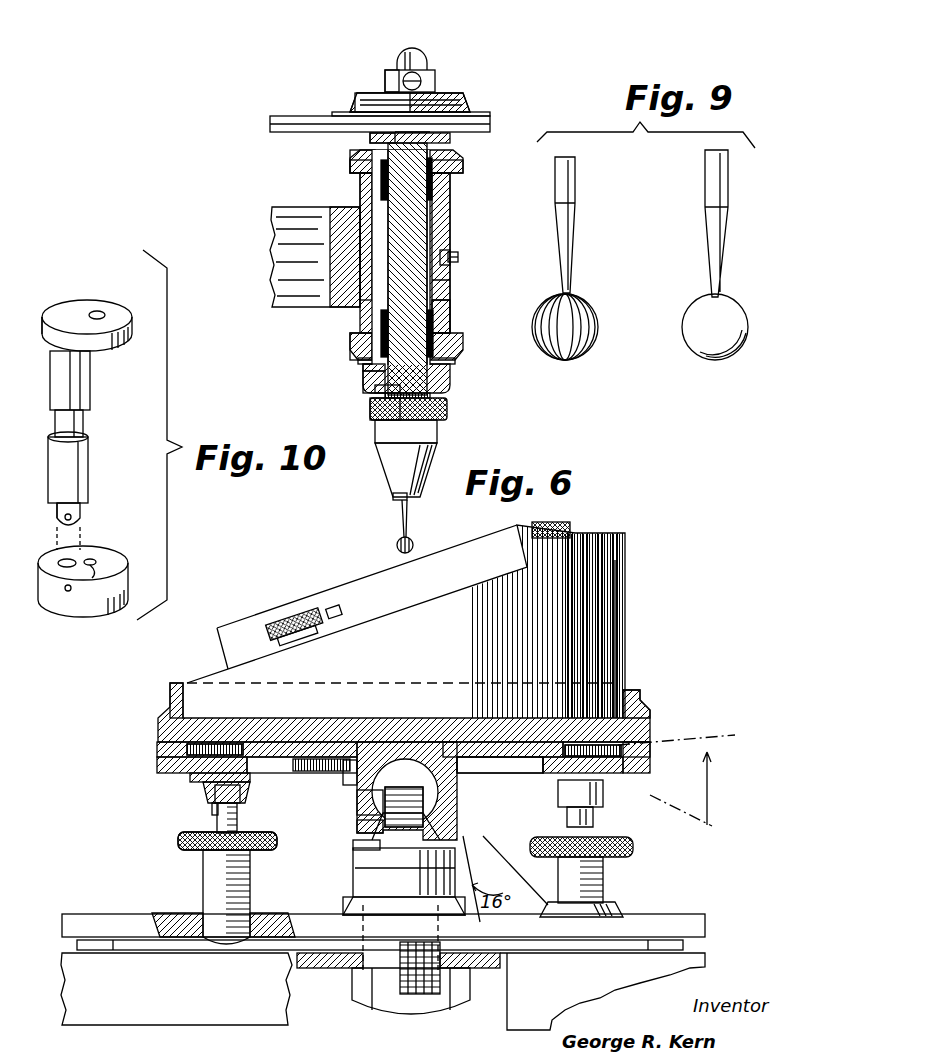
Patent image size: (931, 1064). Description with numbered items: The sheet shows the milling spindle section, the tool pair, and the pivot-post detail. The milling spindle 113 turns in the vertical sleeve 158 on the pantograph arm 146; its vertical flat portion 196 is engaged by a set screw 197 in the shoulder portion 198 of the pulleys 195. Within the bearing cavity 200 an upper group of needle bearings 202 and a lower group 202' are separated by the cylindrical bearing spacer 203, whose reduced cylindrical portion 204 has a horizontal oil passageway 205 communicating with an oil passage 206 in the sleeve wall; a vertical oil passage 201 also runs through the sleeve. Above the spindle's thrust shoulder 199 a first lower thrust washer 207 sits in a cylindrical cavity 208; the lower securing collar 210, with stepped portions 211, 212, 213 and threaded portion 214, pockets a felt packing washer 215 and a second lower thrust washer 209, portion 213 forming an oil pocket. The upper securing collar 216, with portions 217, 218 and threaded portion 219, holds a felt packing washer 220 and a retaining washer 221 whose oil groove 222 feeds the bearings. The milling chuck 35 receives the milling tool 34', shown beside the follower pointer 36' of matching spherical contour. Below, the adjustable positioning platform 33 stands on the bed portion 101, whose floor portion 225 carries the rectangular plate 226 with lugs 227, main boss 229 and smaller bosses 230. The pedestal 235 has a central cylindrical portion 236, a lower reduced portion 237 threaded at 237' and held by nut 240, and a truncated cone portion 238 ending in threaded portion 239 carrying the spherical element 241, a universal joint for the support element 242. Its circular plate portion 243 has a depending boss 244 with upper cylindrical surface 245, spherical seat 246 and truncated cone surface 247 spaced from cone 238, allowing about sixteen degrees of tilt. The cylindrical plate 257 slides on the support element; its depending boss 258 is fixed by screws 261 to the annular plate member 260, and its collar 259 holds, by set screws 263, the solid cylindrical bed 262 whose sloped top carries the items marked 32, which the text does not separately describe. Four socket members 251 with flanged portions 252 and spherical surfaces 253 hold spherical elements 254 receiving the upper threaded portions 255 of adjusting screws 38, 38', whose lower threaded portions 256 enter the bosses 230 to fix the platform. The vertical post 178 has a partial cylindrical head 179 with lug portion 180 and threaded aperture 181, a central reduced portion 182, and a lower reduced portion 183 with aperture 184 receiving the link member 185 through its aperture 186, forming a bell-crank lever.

In FIG. 6, the vertical flat portion 196 is at (410, 48).
In FIG. 6, the milling spindle 113 is at (447, 30).
In FIG. 6, the set screw 197 is at (386, 79).
In FIG. 6, the shoulder portion 198 is at (436, 80).
In FIG. 6, the pulleys 195 is at (472, 89).
In FIG. 6, the arm 146 is at (291, 197).
In FIG. 6, the upper securing collar 216 is at (451, 136).
In FIG. 6, the cylindrical portion 217 is at (458, 146).
In FIG. 6, the cylindrical portion 218 is at (463, 159).
In FIG. 6, the internally threaded portion 219 is at (463, 170).
In FIG. 6, the felt packing washer 220 is at (370, 138).
In FIG. 6, the retaining washer 221 is at (362, 158).
In FIG. 6, the oil groove 222 is at (366, 186).
In FIG. 6, the upper group of needle bearings 202 is at (442, 253).
In FIG. 6, the vertical sleeve 158 is at (452, 223).
In FIG. 6, the cylindrical bearing spacer 203 is at (428, 239).
In FIG. 6, the reduced cylindrical portion 204 is at (459, 258).
In FIG. 6, the oil passage 206 is at (456, 263).
In FIG. 6, the horizontal oil passageway 205 is at (446, 286).
In FIG. 6, the lower group of needle bearings 202' is at (478, 319).
In FIG. 6, the first lower thrust washer 207 is at (466, 349).
In FIG. 6, the cylindrical cavity 208 is at (462, 361).
In FIG. 6, the second lower thrust washer 209 is at (452, 379).
In FIG. 6, the lower securing collar 210 is at (450, 394).
In FIG. 6, the felt packing washer 215 is at (447, 416).
In FIG. 6, the cylindrical portion 211 is at (373, 406).
In FIG. 6, the cylindrical portion 212 is at (380, 393).
In FIG. 6, the cylindrical portion 213 is at (375, 381).
In FIG. 6, the thrust shoulder 199 is at (366, 373).
In FIG. 6, the internally threaded portion 214 is at (352, 349).
In FIG. 6, the bearing cavity 200 is at (386, 326).
In FIG. 6, the oil passage 201 is at (385, 316).
In FIG. 6, the milling chuck 35 is at (393, 476).
In FIG. 6, the milling tool 34' is at (388, 539).
In FIG. 9, the milling tool 34' is at (582, 258).
In FIG. 9, the follower pointer 36' is at (731, 255).
In FIG. 6, the adjustable positioning platform 33 is at (634, 598).
In FIG. 6, the work piece 32 is at (290, 615).
In FIG. 6, the solid cylindrical bed 262 is at (627, 661).
In FIG. 6, the set screws 263 is at (646, 701).
In FIG. 6, the upstanding reduced cylindrical collar 259 is at (172, 691).
In FIG. 6, the cylindrical plate 257 is at (160, 723).
In FIG. 6, the annular depending boss portion 258 is at (160, 749).
In FIG. 6, the annular cylindrical plate member 260 is at (160, 763).
In FIG. 6, the screws 261 is at (195, 777).
In FIG. 6, the circular plate portion 243 is at (333, 771).
In FIG. 6, the upper flanged portion 252 is at (206, 791).
In FIG. 6, the depending socket members 251 is at (216, 798).
In FIG. 6, the spherical inner surface 253 is at (214, 812).
In FIG. 6, the spherical elements 254 is at (239, 816).
In FIG. 6, the upper threaded portion 255 is at (180, 841).
In FIG. 6, the adjusting screw 38' is at (204, 848).
In FIG. 6, the threaded portion 256 is at (205, 881).
In FIG. 6, the adjusting screw 38 is at (603, 841).
In FIG. 6, the secondary smaller bosses 230 is at (205, 911).
In FIG. 6, the spherical element 241 is at (458, 801).
In FIG. 6, the upper cylindrical surface 245 is at (462, 780).
In FIG. 6, the spherical surface 246 is at (440, 813).
In FIG. 6, the truncated cone surface 247 is at (446, 839).
In FIG. 6, the support element 242 is at (346, 781).
In FIG. 6, the hollow cylindrical depending boss 244 is at (358, 806).
In FIG. 6, the threaded portion 239 is at (366, 829).
In FIG. 6, the truncated cone portion 238 is at (361, 849).
In FIG. 6, the pedestal 235 is at (346, 873).
In FIG. 6, the central cylindrical portion 236 is at (356, 888).
In FIG. 6, the main boss 229 is at (356, 906).
In FIG. 6, the rectangular shaped plate 226 is at (86, 889).
In FIG. 6, the downwardly extending lugs 227 is at (77, 944).
In FIG. 6, the extending bed portion 101 is at (150, 1027).
In FIG. 6, the floor portion 225 is at (310, 969).
In FIG. 6, the lower reduced cylindrical portion 237 is at (371, 937).
In FIG. 6, the threaded lower end 237' is at (369, 980).
In FIG. 6, the nut 240 is at (452, 996).
In FIG. 10, the lug portion 180 is at (153, 286).
In FIG. 10, the threaded vertical aperture 181 is at (99, 312).
In FIG. 10, the partial cylindrical head 179 is at (58, 306).
In FIG. 10, the vertical post 178 is at (98, 383).
In FIG. 10, the reduced cylindrical portion 182 is at (85, 421).
In FIG. 10, the horizontally extending aperture 184 is at (72, 518).
In FIG. 10, the reduced cylindrical portion 183 is at (58, 519).
In FIG. 10, the link member 185 is at (113, 548).
In FIG. 10, the horizontally extending aperture 186 is at (62, 591).